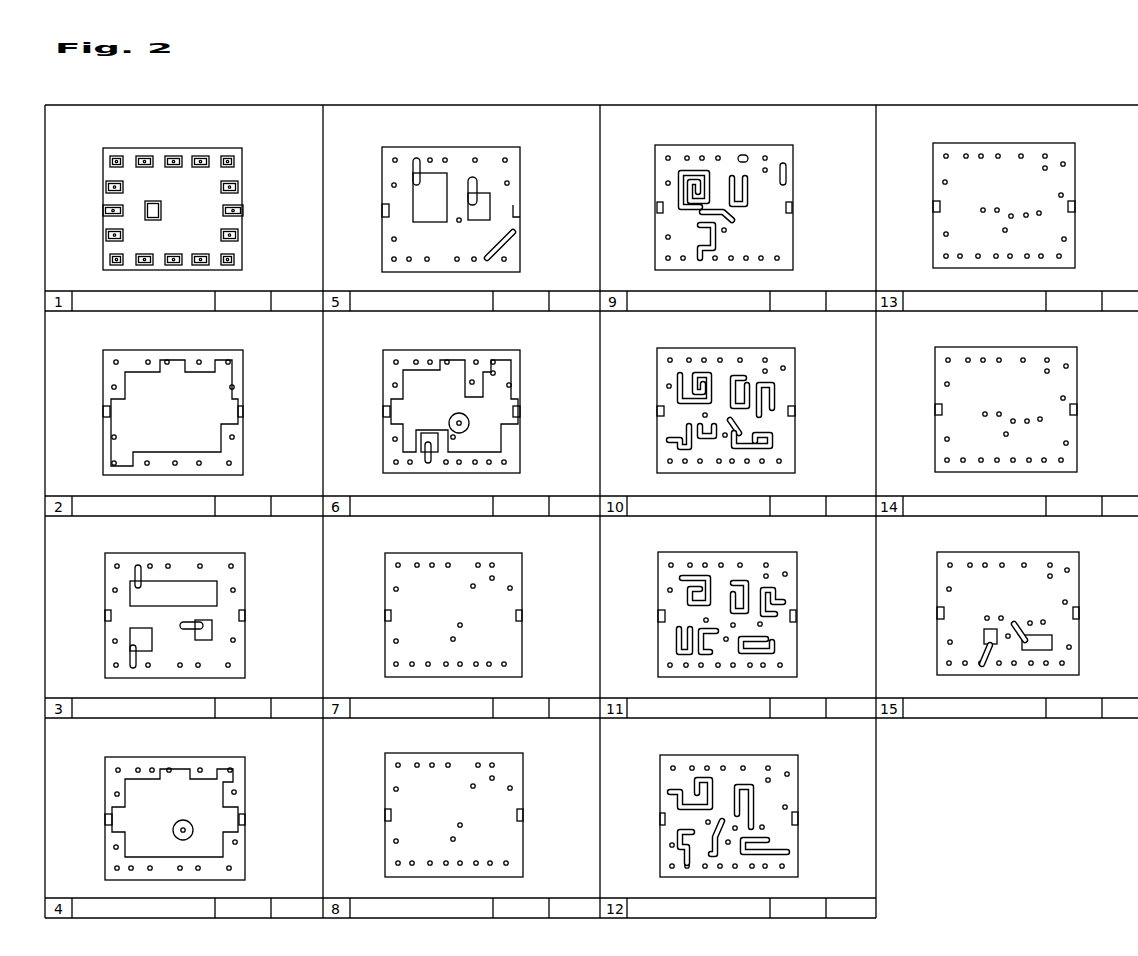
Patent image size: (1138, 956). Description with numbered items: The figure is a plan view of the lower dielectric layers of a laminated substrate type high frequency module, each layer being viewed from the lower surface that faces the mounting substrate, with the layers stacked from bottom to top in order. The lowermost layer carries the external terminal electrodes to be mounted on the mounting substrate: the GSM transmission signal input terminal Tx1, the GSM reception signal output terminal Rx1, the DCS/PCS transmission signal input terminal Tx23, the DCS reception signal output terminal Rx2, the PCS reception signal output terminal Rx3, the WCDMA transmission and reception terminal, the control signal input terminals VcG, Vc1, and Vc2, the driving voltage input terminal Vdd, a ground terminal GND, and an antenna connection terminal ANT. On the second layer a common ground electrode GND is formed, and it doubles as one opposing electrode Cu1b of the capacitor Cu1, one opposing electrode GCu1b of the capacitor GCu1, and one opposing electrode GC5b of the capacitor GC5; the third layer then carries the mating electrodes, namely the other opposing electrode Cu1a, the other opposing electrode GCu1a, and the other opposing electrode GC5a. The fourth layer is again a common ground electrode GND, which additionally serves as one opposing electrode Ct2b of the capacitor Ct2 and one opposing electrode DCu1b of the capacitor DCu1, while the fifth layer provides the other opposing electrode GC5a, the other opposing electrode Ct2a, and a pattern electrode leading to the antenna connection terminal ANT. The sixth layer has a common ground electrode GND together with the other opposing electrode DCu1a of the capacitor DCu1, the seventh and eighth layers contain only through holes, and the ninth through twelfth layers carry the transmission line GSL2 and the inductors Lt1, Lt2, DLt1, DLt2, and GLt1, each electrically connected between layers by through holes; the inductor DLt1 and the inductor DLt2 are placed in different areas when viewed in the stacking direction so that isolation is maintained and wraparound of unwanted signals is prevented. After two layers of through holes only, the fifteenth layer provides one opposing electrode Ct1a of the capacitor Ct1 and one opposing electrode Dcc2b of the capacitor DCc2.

The control signal input terminal VcG is at (117, 146).
The DCS reception signal output terminal Rx2 is at (145, 146).
The ground terminal / common ground electrode GND is at (322, 509).
The PCS reception signal output terminal Rx3 is at (199, 146).
The GSM reception signal output terminal Rx1 is at (96, 187).
The GSM transmission signal input terminal Tx1 is at (97, 237).
The antenna connection terminal ANT is at (385, 237).
The control signal input terminal Vc2 is at (252, 259).
The DCS/PCS transmission signal input terminal Tx23 is at (156, 271).
The driving voltage input terminal Vdd is at (184, 271).
The control signal input terminal Vc1 is at (212, 271).
The opposing electrode of capacitor GC5 GC5a is at (292, 365).
The opposing electrode of capacitor Ct2 Ct2a is at (511, 198).
The transmission line GSL2 is at (670, 464).
The inductor Lt2 is at (754, 474).
The inductor DLt2 is at (729, 562).
The inductor DLt1 is at (796, 494).
The inductor Lt1 is at (783, 657).
The inductor GLt1 is at (658, 644).
The opposing electrode of capacitor DCu1 DCu1a is at (410, 464).
The opposing electrode of capacitor GCu1 GCu1a is at (107, 640).
The opposing electrode of capacitor Cu1 Cu1a is at (232, 630).
The opposing electrode of capacitor Ct1 Ct1a is at (1067, 637).
The opposing electrode of capacitor DCc2 Dcc2b is at (1022, 661).
The opposing electrode of capacitor Cu1 Cu1b is at (342, 625).
The opposing electrode of capacitor GCu1 GCu1b is at (342, 625).
The opposing electrode of capacitor GC5 GC5b is at (343, 625).
The opposing electrode of capacitor Ct2 Ct2b is at (343, 659).
The opposing electrode of capacitor DCu1 DCu1b is at (209, 830).